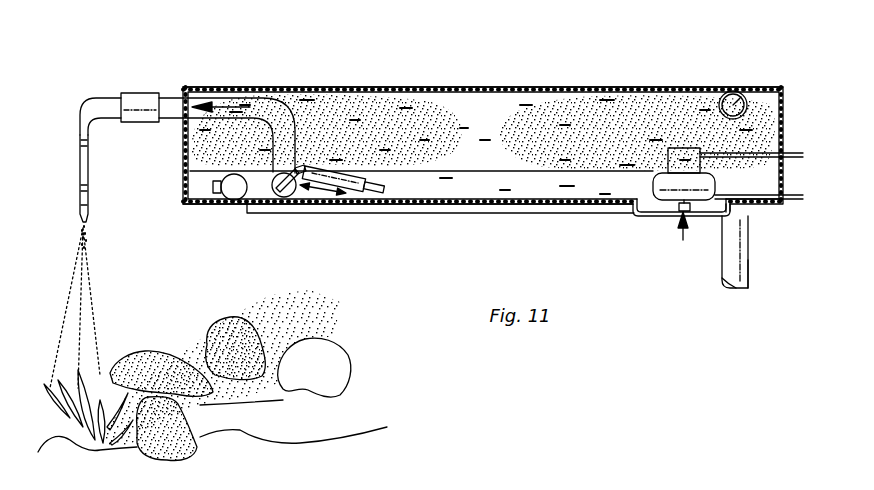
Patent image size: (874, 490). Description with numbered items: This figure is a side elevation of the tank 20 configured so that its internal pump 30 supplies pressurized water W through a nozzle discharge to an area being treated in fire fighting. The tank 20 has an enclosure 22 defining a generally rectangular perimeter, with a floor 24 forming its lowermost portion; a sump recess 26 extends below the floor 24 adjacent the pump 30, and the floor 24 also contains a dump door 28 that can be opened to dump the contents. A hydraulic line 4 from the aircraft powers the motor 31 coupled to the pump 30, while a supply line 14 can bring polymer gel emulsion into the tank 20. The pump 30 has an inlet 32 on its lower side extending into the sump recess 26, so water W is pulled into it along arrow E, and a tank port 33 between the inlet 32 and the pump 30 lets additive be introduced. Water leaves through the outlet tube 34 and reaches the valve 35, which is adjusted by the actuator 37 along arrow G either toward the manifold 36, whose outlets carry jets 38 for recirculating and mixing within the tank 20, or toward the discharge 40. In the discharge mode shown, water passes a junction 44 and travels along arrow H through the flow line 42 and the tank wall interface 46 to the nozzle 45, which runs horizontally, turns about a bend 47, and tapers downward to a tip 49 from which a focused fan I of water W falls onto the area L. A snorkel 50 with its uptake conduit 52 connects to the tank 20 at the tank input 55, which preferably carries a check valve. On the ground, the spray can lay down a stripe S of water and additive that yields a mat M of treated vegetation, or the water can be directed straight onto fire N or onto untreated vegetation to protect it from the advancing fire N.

The hydraulic line 4 is at (798, 152).
The supply line 14 is at (793, 203).
The tank 20 is at (510, 110).
The enclosure 22 is at (432, 87).
The floor 24 is at (223, 205).
The sump recess 26 is at (636, 216).
The dump door 28 is at (435, 213).
The pump 30 is at (654, 188).
The motor 31 is at (701, 166).
The inlet 32 is at (679, 211).
The tank port 33 is at (701, 216).
The outlet tube 34 is at (568, 188).
The valve 35 is at (290, 172).
The manifold 36 is at (236, 184).
The actuator 37 is at (353, 186).
The jet 38 is at (213, 187).
The discharge 40 is at (107, 87).
The flow line 42 is at (189, 98).
The junction 44 is at (292, 170).
The nozzle 45 is at (82, 183).
The tank wall interface 46 is at (138, 93).
The bend 47 is at (88, 108).
The tip 49 is at (88, 222).
The snorkel 50 is at (752, 276).
The uptake conduit 52 is at (721, 277).
The tank input 55 is at (735, 100).
The flow arrow H is at (227, 107).
The water W is at (491, 124).
The actuator arrow G is at (322, 192).
The inlet flow arrow E is at (683, 240).
The fan I is at (68, 310).
The mat M is at (208, 342).
The stripe S is at (293, 305).
The area L is at (338, 377).
The fire N is at (88, 438).